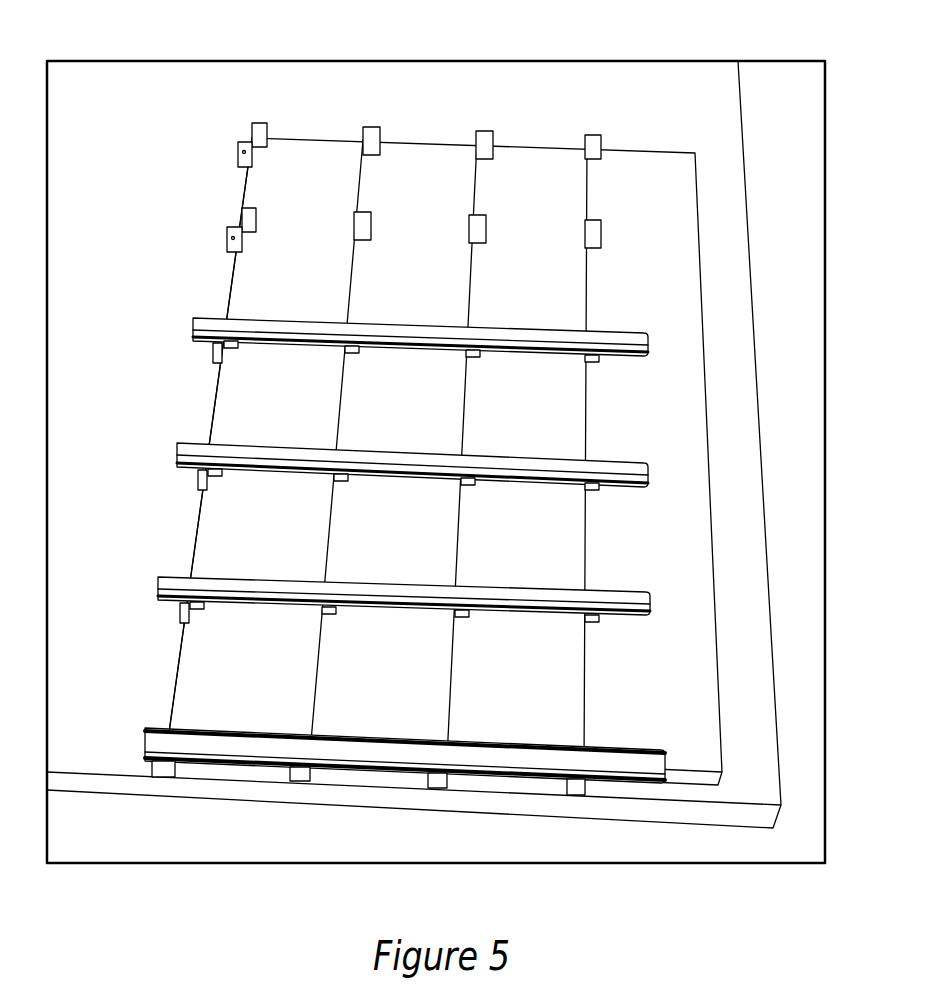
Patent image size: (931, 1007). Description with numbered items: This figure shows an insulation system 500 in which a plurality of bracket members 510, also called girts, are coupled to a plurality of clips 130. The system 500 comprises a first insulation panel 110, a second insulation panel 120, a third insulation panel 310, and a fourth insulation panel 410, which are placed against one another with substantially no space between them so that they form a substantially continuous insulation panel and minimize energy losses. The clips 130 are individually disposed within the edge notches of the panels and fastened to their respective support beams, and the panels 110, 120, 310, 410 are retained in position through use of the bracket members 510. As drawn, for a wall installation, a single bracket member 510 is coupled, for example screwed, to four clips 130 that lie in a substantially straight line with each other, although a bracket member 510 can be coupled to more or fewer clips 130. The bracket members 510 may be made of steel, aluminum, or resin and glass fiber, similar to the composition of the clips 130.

The insulation system 500 is at (152, 160).
The fourth insulation panel 410 is at (308, 132).
The third insulation panel 310 is at (430, 136).
The first insulation panel 110 is at (537, 138).
The second insulation panel 120 is at (645, 143).
The clips 130 is at (248, 346).
The bracket members 510 is at (192, 328).